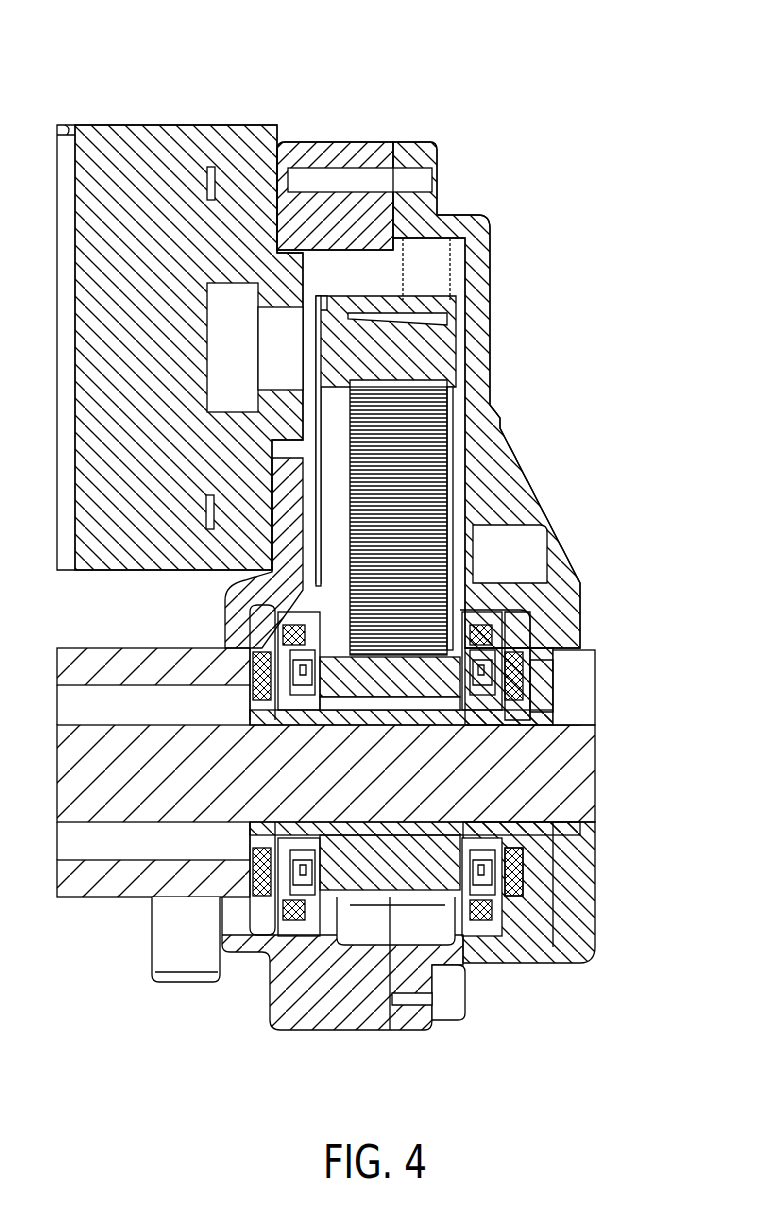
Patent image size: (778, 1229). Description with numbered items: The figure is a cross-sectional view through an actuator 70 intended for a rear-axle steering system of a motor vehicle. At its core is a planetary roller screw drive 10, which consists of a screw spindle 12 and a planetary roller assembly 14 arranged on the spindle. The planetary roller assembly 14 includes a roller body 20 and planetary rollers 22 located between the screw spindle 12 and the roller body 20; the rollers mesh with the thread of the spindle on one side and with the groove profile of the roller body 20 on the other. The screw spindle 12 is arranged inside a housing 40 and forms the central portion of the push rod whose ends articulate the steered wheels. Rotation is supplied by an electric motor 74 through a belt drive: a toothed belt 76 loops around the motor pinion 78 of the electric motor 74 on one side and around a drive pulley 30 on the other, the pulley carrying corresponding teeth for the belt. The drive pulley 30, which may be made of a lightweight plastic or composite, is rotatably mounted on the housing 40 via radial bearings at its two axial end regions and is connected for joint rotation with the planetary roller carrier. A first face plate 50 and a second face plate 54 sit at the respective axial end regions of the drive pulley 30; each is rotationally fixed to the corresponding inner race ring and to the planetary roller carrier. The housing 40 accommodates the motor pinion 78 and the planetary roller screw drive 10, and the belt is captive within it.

The actuator 70 is at (476, 85).
The electric motor 74 is at (160, 150).
The motor pinion 78 is at (440, 358).
The toothed belt 76 is at (430, 437).
The housing 40 is at (527, 487).
The planetary roller screw drive 10 is at (520, 632).
The roller body 20 is at (515, 660).
The planetary rollers 22 is at (535, 696).
The screw spindle 12 is at (588, 790).
The second face plate 54 is at (540, 872).
The planetary roller assembly 14 is at (500, 928).
The first face plate 50 is at (285, 898).
The drive pulley 30 is at (333, 907).